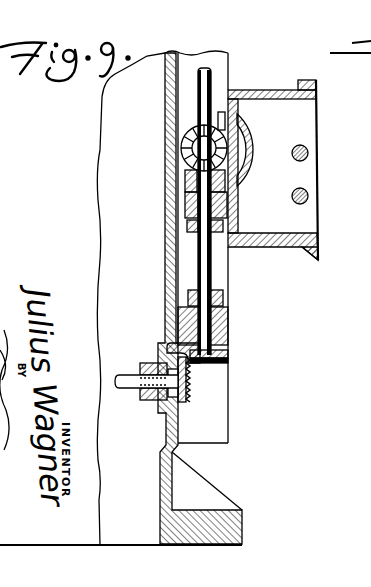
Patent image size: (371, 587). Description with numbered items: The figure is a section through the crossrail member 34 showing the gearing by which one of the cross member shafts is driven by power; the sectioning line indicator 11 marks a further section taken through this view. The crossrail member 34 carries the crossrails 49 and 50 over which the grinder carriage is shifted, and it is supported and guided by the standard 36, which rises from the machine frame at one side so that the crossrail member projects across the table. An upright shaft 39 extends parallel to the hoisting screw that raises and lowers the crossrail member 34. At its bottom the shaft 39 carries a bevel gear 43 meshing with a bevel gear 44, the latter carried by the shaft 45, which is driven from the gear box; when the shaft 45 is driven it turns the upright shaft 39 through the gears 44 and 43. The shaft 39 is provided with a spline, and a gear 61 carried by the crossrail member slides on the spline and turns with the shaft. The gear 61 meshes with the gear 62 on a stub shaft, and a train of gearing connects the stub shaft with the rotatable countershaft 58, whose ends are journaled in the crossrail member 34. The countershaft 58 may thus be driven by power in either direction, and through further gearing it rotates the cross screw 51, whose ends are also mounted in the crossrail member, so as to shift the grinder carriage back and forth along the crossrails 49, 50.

The section line indicator 11 is at (262, 8).
The crossrail member 34 is at (257, 246).
The standard 36 is at (107, 183).
The shaft 39 is at (200, 273).
The bevel gear 43 is at (228, 359).
The bevel gear 44 is at (187, 400).
The shaft 45 is at (135, 383).
The crossrail 49 is at (301, 80).
The crossrail 50 is at (314, 260).
The cross screw 51 is at (308, 194).
The countershaft 58 is at (308, 150).
The gear 61 is at (185, 178).
The gear 62 is at (190, 150).